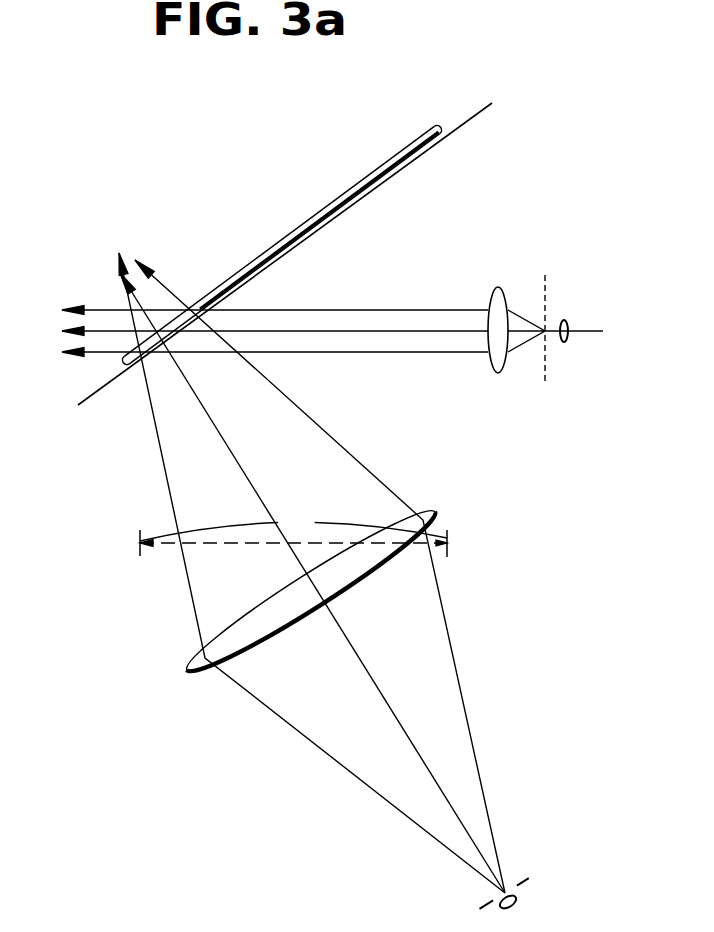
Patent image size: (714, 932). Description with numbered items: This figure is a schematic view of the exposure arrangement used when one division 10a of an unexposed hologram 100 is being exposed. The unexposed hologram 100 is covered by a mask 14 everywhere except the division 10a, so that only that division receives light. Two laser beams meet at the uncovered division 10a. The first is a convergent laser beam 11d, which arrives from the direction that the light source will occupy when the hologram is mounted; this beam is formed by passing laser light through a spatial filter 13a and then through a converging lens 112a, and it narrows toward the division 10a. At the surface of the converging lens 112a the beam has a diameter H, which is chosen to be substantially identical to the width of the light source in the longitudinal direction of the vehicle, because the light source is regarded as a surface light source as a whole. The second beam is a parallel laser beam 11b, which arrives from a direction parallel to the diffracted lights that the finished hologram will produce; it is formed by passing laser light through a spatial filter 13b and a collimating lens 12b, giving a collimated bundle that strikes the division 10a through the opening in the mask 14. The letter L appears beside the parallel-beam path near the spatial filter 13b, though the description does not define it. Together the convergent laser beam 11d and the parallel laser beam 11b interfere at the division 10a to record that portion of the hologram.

The unexposed hologram 100 is at (388, 165).
The mask 14 is at (380, 190).
The parallel laser beam 11b is at (57, 295).
The collimating lens 12b is at (497, 287).
The spatial filter 13b is at (570, 396).
The optical axis L is at (592, 338).
The division 10a is at (192, 342).
The convergent laser beam 11d is at (352, 464).
The converging lens 112a is at (281, 622).
The diameter of the convergent laser beam H is at (293, 532).
The spatial filter 13a is at (519, 862).